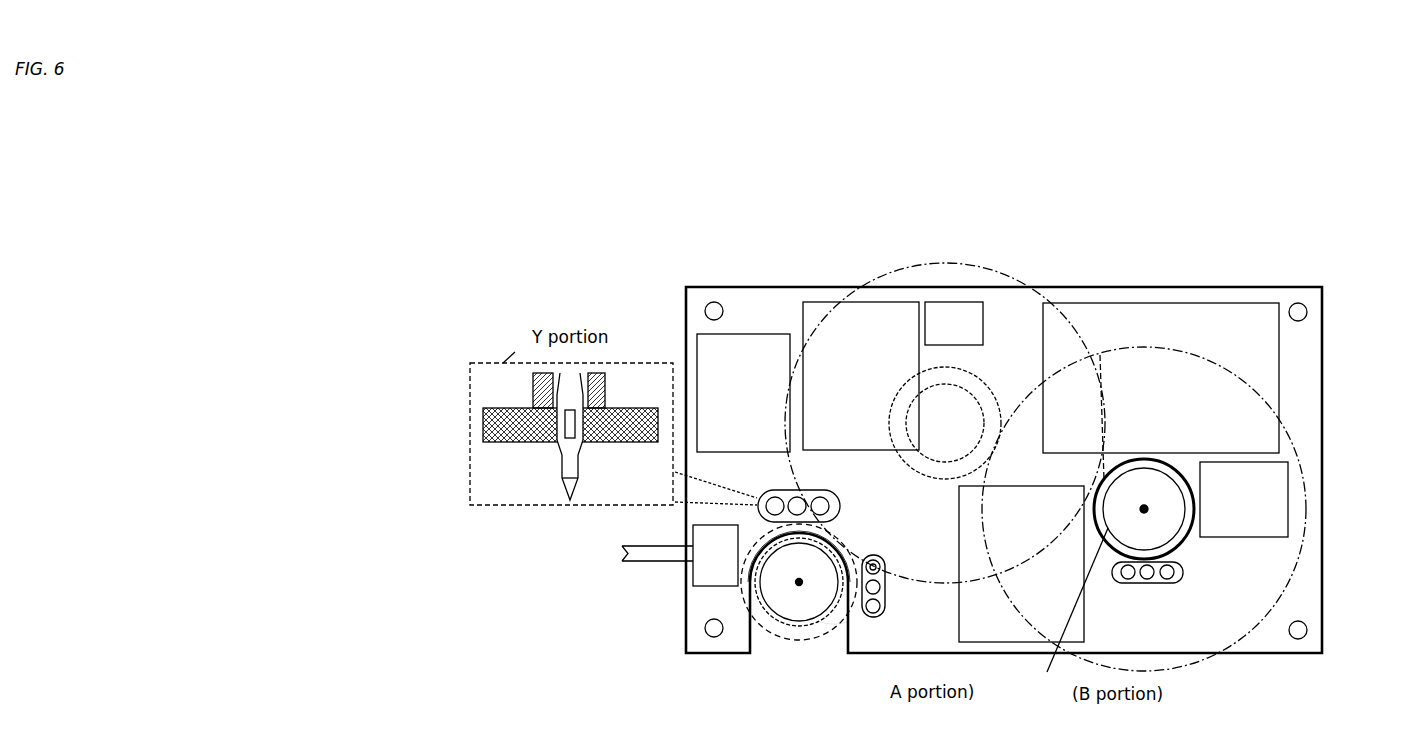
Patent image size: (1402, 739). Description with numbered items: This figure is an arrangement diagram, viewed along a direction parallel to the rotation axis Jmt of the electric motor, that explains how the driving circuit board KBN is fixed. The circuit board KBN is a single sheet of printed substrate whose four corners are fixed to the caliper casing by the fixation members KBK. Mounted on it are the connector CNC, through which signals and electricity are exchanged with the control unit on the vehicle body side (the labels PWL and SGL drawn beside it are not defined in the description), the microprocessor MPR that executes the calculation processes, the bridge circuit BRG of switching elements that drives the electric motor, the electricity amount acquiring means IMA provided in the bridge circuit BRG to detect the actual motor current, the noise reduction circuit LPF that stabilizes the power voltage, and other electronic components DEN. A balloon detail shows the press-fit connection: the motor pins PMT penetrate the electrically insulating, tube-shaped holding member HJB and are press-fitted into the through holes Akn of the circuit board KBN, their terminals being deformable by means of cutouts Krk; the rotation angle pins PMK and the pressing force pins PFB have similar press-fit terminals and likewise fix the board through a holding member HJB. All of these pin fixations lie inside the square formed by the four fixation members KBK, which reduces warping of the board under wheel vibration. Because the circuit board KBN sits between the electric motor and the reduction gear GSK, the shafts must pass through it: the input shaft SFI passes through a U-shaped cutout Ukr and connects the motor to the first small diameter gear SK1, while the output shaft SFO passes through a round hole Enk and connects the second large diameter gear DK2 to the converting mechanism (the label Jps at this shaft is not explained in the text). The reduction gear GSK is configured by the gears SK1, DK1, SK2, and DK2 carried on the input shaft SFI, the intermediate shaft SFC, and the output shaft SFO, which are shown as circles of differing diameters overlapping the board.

The circuit board KBN is at (1190, 287).
The fixation members KBK is at (705, 311).
The noise reduction circuit LPF is at (743, 393).
The bridge circuit BRG is at (861, 376).
The electricity amount acquiring means IMA is at (954, 323).
The microprocessor MPR is at (1161, 378).
The other electronic components DEN is at (1123, 552).
The connector CNC is at (715, 555).
The intermediate shaft SFC is at (945, 423).
The gear SK2 is at (975, 380).
The gear DK1 is at (950, 263).
The second large diameter gear DK2 is at (1192, 352).
The reduction gear GSK is at (1098, 338).
The output shaft SFO is at (1144, 509).
The output-side joint Jps is at (1146, 511).
The input shaft SFI is at (799, 582).
The rotation axis Jmt is at (800, 585).
The U-shaped cutout Ukr is at (820, 623).
The motor pins PMT is at (778, 492).
The holding member HJB is at (815, 492).
The first small diameter gear SK1 is at (848, 560).
The rotation angle pins PMK is at (887, 603).
The pressing force pins PFB is at (1125, 585).
The round hole Enk is at (1066, 615).
The power line PWL is at (655, 545).
The signal line SGL is at (657, 566).
The cutouts Krk is at (565, 442).
The through holes Akn is at (588, 444).